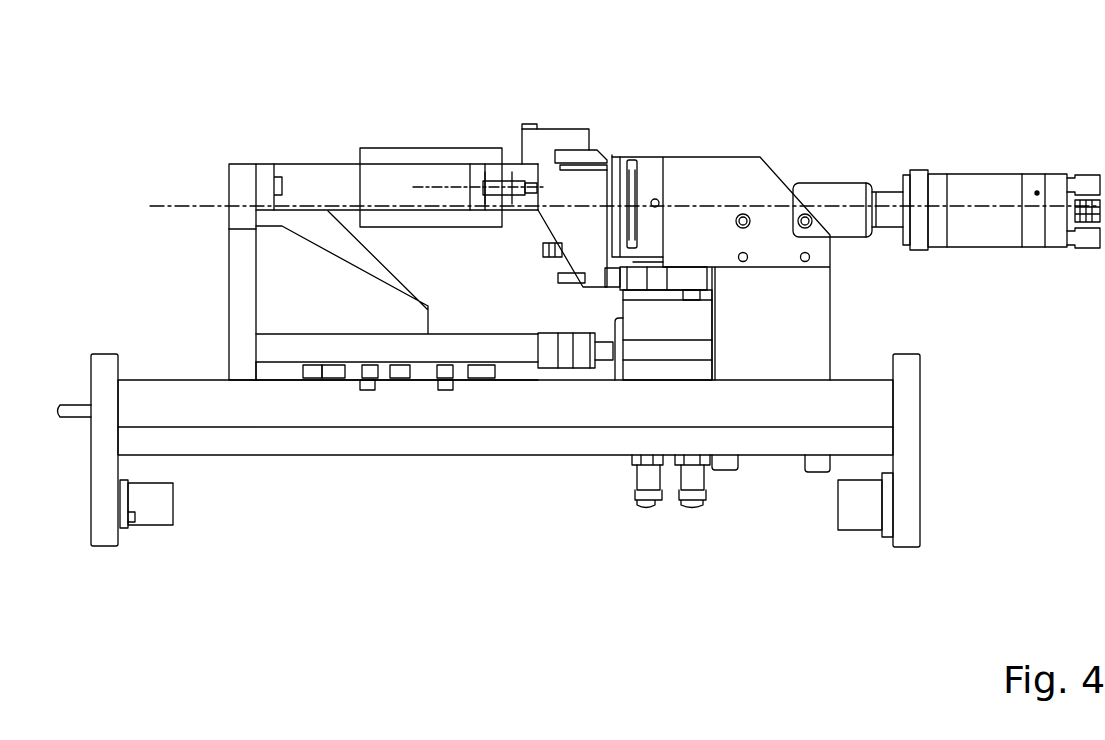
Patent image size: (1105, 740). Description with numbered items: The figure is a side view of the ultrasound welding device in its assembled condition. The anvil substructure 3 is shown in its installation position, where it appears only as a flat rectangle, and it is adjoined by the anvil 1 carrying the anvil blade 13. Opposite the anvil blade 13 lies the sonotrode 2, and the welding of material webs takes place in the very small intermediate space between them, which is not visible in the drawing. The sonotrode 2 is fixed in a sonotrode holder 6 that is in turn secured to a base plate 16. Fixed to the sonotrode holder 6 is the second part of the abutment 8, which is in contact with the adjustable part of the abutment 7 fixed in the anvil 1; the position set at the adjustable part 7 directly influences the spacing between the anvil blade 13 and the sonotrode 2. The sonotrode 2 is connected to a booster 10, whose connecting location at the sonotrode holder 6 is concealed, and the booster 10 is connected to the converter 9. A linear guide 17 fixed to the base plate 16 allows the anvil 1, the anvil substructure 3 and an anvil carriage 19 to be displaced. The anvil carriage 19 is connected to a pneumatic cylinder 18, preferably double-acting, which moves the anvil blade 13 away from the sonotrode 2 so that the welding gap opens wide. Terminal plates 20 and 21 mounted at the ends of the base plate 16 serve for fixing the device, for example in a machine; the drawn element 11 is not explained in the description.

The anvil 1 is at (569, 185).
The sonotrode 2 is at (624, 155).
The anvil substructure 3 is at (316, 183).
The sonotrode holder 6 is at (715, 175).
The adjustable part of the abutment 7 is at (568, 278).
The second part of the abutment 8 is at (623, 290).
The converter 9 is at (991, 190).
The booster 10 is at (818, 195).
The piston rod end 11 is at (512, 210).
The anvil blade 13 is at (605, 150).
The base plate 16 is at (783, 410).
The linear guide 17 is at (420, 372).
The pneumatic cylinder 18 is at (663, 372).
The anvil carriage 19 is at (271, 310).
The terminal plate 20 is at (103, 530).
The terminal plate 21 is at (905, 525).